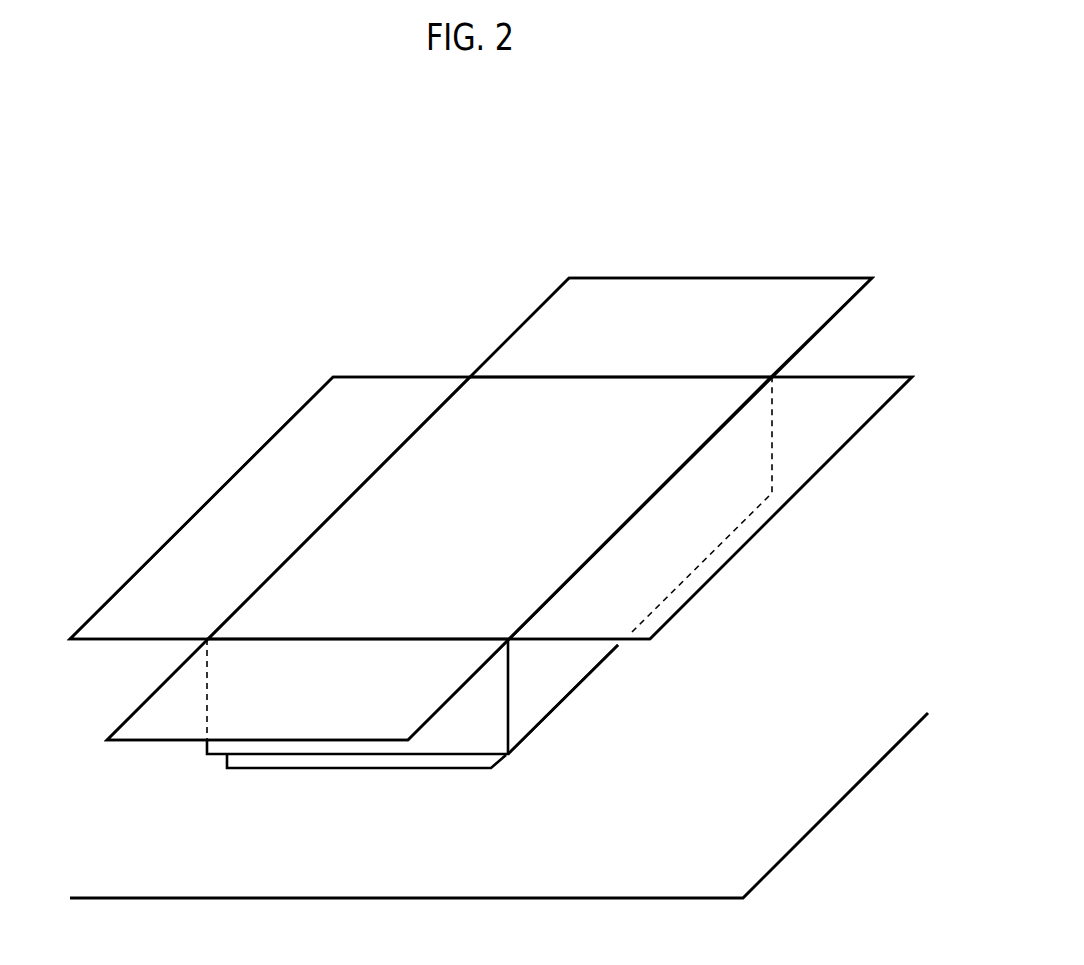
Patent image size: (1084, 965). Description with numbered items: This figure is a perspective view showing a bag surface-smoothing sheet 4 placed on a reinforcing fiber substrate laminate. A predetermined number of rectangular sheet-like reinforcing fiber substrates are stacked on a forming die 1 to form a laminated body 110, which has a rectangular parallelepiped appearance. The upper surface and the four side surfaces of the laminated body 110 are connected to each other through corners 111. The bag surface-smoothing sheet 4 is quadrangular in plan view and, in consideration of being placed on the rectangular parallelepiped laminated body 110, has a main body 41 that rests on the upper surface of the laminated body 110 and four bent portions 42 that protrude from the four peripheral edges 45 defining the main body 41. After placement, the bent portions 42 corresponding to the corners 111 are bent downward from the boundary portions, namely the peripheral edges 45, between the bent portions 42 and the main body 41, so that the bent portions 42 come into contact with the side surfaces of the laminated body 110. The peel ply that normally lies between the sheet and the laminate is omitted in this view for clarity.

The forming die 1 is at (440, 768).
The bag surface-smoothing sheet 4 is at (131, 578).
The main body 41 is at (337, 510).
The bent portions 42 is at (650, 276).
The peripheral edges 45 is at (360, 485).
The laminated body 110 is at (548, 717).
The corners 111 is at (305, 542).